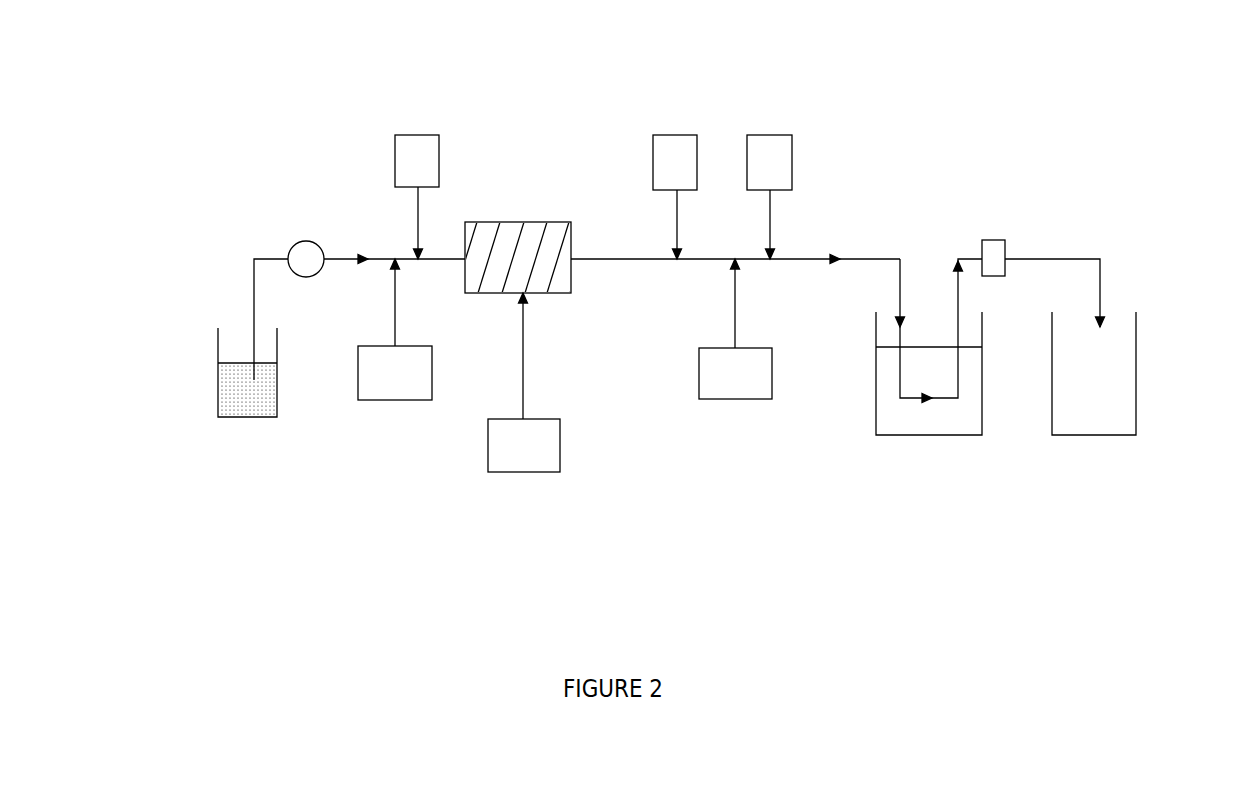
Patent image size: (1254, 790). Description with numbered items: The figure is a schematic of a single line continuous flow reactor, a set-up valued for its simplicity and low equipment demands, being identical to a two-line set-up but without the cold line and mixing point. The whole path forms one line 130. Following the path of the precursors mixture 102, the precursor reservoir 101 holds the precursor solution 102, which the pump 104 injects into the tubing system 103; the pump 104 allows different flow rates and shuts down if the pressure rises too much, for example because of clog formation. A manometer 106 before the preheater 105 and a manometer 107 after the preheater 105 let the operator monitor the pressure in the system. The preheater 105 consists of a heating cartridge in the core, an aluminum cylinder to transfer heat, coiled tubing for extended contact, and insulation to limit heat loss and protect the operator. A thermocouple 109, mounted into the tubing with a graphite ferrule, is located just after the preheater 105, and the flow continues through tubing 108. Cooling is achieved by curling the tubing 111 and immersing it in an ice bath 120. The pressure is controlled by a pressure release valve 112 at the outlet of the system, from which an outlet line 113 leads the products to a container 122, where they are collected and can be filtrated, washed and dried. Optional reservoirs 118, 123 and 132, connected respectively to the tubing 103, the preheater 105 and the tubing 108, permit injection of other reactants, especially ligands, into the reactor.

The precursor reservoir 101 is at (218, 345).
The precursors mixture 102 is at (240, 400).
The tubing system 103 is at (253, 290).
The pump 104 is at (300, 241).
The preheater 105 is at (508, 222).
The manometer 106 is at (395, 153).
The manometer 107 is at (792, 155).
The tubing 108 is at (628, 259).
The thermocouple 109 is at (697, 135).
The coiled tubing 111 is at (882, 259).
The pressure release valve 112 is at (1008, 240).
The waste line 113 is at (1083, 259).
The optional reservoir 118 is at (395, 329).
The ice bath 120 is at (910, 435).
The container 122 is at (1137, 400).
The optional reservoir 123 is at (524, 382).
The line 130 is at (318, 163).
The optional reservoir 132 is at (735, 329).